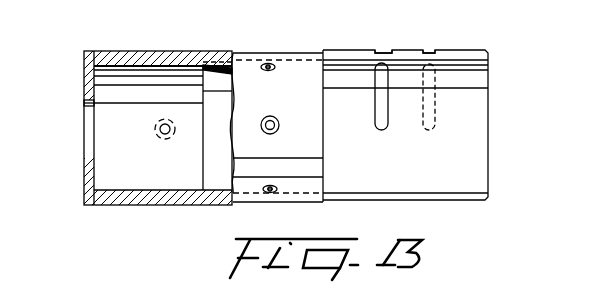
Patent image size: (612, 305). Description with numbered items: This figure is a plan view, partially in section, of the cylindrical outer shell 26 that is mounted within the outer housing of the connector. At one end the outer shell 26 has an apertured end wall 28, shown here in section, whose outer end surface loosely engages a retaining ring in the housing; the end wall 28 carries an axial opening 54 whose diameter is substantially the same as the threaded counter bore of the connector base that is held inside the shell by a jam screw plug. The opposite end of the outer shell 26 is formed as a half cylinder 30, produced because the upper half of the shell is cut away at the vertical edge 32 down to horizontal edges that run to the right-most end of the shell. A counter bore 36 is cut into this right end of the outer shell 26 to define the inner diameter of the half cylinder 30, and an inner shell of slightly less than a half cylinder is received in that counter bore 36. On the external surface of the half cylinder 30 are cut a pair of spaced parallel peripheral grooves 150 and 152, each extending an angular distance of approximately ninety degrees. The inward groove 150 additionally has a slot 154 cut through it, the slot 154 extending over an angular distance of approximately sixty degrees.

The outer shell 26 is at (180, 50).
The end wall 28 is at (97, 172).
The half cylinder 30 is at (455, 200).
The vertical edge 32 is at (325, 168).
The counter bore 36 is at (218, 68).
The axial opening 54 is at (86, 104).
The peripheral groove 150 is at (381, 50).
The peripheral groove 152 is at (435, 48).
The slot 154 is at (375, 103).